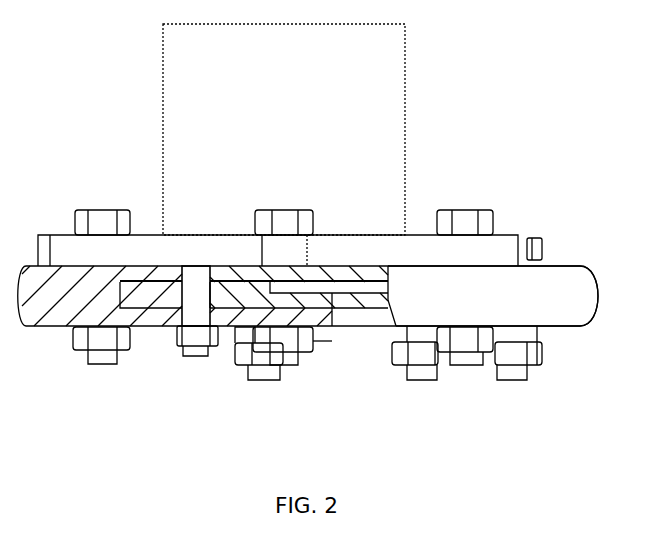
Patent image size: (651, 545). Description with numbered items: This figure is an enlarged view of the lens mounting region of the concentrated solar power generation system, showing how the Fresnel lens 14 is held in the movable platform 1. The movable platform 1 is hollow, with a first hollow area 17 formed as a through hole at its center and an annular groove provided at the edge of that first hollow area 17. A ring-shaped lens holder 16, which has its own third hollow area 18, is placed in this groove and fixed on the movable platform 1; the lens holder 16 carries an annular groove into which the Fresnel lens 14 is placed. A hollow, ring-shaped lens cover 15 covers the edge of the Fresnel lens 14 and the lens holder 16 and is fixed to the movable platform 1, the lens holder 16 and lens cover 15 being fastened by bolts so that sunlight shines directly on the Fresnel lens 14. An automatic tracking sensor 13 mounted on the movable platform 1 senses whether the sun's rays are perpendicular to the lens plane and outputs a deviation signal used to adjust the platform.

The movable platform 1 is at (258, 300).
The automatic tracking sensor 13 is at (187, 172).
The Fresnel lens 14 is at (303, 282).
The lens cover 15 is at (340, 268).
The lens holder 16 is at (157, 300).
The first hollow area 17 is at (374, 316).
The third hollow area 18 is at (350, 300).